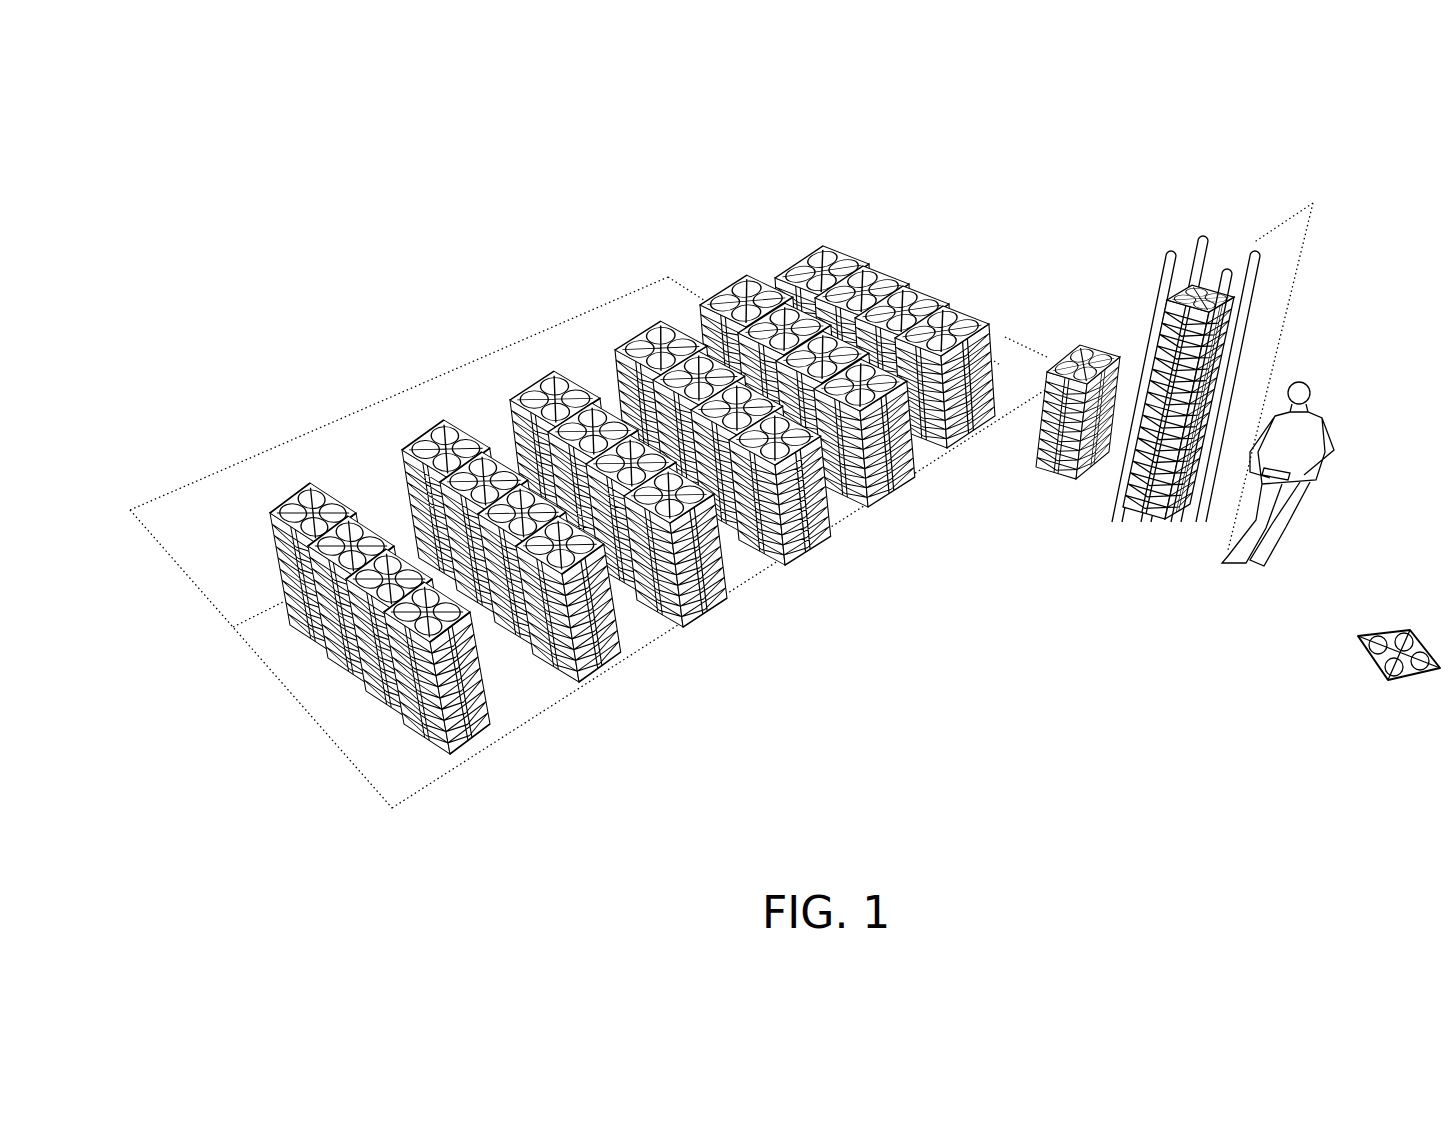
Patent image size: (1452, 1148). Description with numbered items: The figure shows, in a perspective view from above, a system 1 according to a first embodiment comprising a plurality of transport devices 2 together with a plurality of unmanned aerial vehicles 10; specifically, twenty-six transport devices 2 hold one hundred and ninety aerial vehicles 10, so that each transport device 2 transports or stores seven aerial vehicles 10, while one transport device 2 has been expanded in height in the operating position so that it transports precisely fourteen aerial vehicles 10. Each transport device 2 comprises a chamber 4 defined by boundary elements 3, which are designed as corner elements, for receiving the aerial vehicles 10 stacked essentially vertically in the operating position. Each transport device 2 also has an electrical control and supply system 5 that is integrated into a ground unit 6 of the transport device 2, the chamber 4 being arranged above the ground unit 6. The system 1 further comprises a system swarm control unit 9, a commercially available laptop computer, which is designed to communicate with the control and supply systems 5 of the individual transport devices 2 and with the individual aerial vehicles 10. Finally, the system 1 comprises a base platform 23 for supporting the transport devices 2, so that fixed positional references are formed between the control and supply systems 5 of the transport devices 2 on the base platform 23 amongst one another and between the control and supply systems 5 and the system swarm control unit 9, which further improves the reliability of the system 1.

The system 1 is at (1366, 92).
The transport device 2 is at (759, 469).
The boundary elements 3 is at (930, 407).
The chamber 4 is at (1221, 257).
The electrical control and supply system 5 is at (602, 662).
The ground unit 6 is at (1040, 465).
The system swarm control unit 9 is at (1290, 481).
The unmanned aerial vehicle 10 is at (928, 337).
The base platform 23 is at (402, 774).